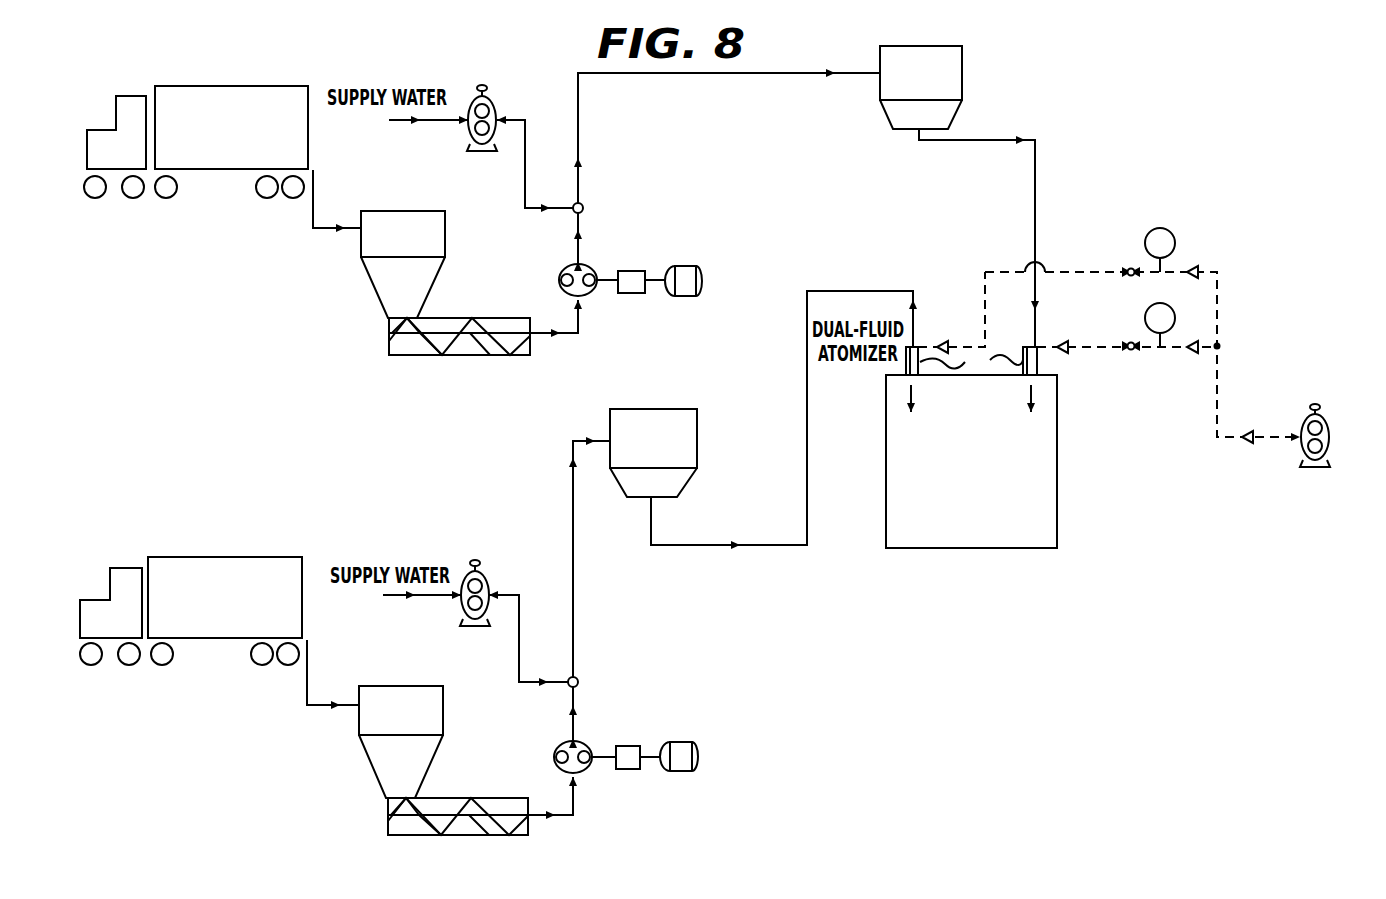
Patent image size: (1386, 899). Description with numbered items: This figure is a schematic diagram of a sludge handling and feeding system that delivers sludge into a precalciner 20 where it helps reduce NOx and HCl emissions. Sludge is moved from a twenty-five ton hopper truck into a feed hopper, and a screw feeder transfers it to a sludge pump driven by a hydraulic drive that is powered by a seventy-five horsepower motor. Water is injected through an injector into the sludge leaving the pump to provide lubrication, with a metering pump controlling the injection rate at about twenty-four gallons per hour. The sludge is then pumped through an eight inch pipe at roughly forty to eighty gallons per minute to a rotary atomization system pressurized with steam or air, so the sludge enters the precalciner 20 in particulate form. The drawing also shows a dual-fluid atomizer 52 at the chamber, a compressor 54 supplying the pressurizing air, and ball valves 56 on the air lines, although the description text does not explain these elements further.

The precalciner 20 is at (1045, 541).
The dual-fluid atomizer 52 is at (970, 323).
The compressor 54 is at (1297, 465).
The ball valve 56 is at (1130, 339).